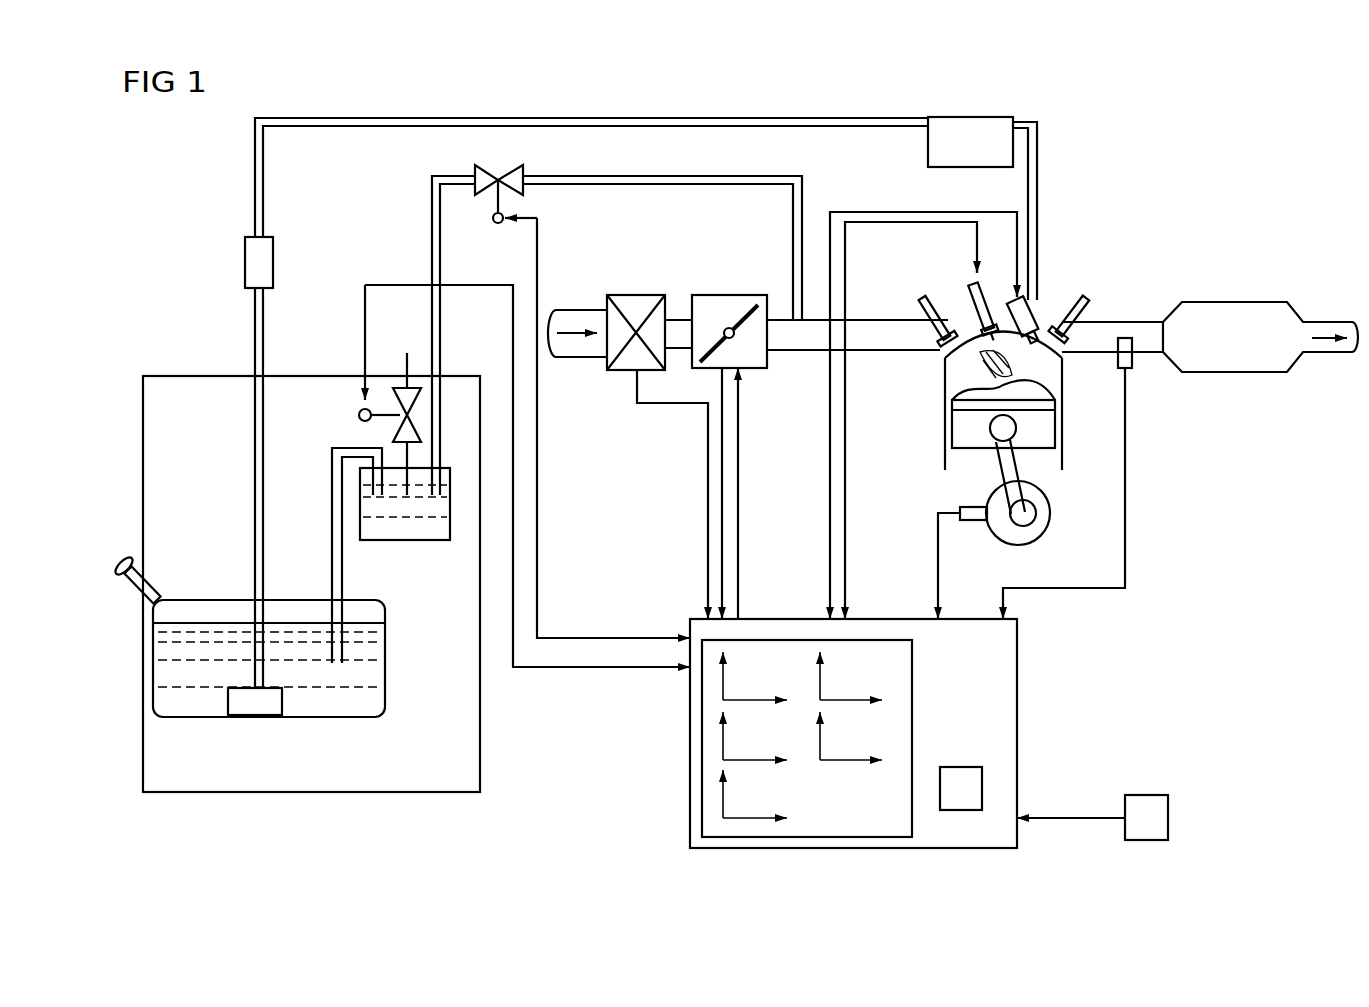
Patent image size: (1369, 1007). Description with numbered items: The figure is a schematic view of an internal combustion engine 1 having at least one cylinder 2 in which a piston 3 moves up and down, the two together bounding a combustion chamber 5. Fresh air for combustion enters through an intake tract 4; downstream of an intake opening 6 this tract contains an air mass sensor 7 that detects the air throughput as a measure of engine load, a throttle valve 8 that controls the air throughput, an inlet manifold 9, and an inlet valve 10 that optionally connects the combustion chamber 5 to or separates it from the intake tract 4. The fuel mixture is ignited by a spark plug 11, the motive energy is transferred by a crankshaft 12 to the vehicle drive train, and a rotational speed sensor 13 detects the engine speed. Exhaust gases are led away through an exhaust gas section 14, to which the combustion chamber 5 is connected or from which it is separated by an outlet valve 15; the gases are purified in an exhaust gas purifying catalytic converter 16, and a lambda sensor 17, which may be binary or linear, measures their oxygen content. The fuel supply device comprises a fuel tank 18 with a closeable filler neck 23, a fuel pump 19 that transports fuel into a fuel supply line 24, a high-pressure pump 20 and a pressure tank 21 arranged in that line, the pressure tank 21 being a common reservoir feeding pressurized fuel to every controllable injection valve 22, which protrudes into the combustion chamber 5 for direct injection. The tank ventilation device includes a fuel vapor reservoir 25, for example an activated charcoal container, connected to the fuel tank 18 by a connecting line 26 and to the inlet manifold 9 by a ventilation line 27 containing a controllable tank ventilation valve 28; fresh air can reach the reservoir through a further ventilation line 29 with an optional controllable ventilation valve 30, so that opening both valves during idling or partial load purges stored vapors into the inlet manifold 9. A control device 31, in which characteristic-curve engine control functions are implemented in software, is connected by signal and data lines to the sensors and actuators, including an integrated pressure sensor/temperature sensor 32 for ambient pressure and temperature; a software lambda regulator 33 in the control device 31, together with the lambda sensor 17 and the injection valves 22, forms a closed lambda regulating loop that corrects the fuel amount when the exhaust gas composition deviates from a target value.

The internal combustion engine 1 is at (1178, 220).
The cylinder 2 is at (1064, 456).
The piston 3 is at (963, 445).
The intake tract 4 is at (622, 428).
The combustion chamber 5 is at (948, 366).
The intake opening 6 is at (578, 312).
The air mass sensor 7 is at (637, 295).
The throttle valve 8 is at (733, 295).
The inlet manifold 9 is at (805, 352).
The inlet valve 10 is at (915, 295).
The spark plug 11 is at (970, 292).
The crankshaft 12 is at (1036, 516).
The rotational speed sensor 13 is at (972, 522).
The exhaust gas section 14 is at (1307, 291).
The outlet valve 15 is at (1092, 306).
The exhaust gas purifying catalytic converter 16 is at (1225, 305).
The lambda sensor 17 is at (1132, 372).
The fuel tank 18 is at (200, 700).
The fuel pump 19 is at (253, 705).
The high-pressure pump 20 is at (273, 262).
The pressure tank 21 is at (970, 128).
The injection valve 22 is at (1036, 308).
The filler neck 23 is at (157, 593).
The fuel supply line 24 is at (446, 116).
The fuel vapor reservoir 25 is at (415, 527).
The connecting line 26 is at (344, 568).
The ventilation line 27 is at (455, 186).
The tank ventilation valve 28 is at (540, 167).
The ventilation line 29 is at (405, 358).
The ventilation valve 30 is at (392, 426).
The control device 31 is at (1018, 704).
The integrated pressure sensor/temperature sensor 32 is at (1148, 795).
The lambda regulator 33 is at (963, 767).